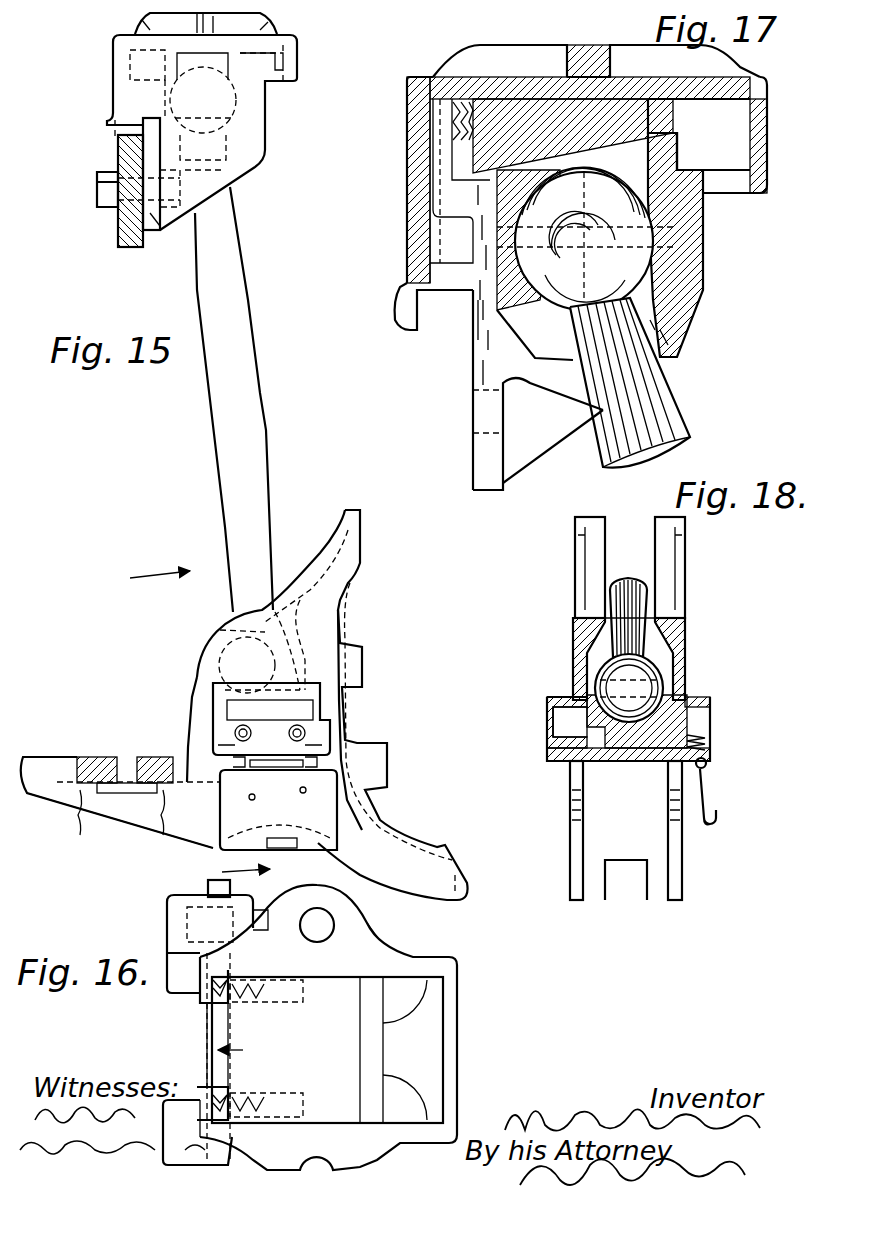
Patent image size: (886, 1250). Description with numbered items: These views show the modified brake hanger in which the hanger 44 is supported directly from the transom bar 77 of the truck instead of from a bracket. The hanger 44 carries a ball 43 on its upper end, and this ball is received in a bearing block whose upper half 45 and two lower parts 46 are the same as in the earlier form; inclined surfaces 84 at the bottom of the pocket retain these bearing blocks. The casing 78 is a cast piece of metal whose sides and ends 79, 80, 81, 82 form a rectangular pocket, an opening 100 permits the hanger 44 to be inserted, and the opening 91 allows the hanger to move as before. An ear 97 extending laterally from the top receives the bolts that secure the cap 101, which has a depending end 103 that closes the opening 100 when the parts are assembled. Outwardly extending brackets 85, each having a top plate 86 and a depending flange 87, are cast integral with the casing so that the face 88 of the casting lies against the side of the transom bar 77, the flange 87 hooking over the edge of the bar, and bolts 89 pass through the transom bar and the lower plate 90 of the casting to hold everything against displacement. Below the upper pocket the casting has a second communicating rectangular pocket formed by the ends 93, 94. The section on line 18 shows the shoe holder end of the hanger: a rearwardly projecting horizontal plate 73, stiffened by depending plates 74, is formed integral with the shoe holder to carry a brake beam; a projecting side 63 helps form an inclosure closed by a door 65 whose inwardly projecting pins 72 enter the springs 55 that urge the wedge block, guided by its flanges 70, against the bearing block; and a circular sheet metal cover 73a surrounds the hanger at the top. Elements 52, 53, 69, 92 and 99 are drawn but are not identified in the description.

In FIG. 15, the section line 18 is at (290, 870).
In FIG. 15, the ball 43 is at (232, 133).
In FIG. 18, the ball 43 is at (629, 688).
In FIG. 15, the hanger 44 is at (258, 443).
In FIG. 18, the hanger 44 is at (633, 575).
In FIG. 17, the upper half of bearing block 45 is at (663, 62).
In FIG. 18, the upper half of bearing block 45 is at (685, 722).
In FIG. 15, the lower half blocks of bearing block 46 is at (353, 610).
In FIG. 18, the lower half blocks of bearing block 46 is at (585, 663).
In FIG. 18, the seat 52 is at (603, 638).
In FIG. 16, the slot 53 is at (327, 1050).
In FIG. 15, the springs 55 is at (270, 735).
In FIG. 16, the springs 55 is at (266, 1048).
In FIG. 17, the springs 55 is at (472, 78).
In FIG. 18, the springs 55 is at (710, 740).
In FIG. 18, the projecting side 63 is at (547, 717).
In FIG. 15, the door 65 is at (278, 810).
In FIG. 18, the door 65 is at (713, 807).
In FIG. 15, the base plate 69 is at (310, 720).
In FIG. 18, the base plate 69 is at (620, 748).
In FIG. 15, the flanges 70 is at (213, 748).
In FIG. 15, the pins 72 is at (277, 798).
In FIG. 18, the pins 72 is at (713, 770).
In FIG. 15, the horizontal plate 73 is at (87, 757).
In FIG. 15, the sheet metal cover 73a is at (207, 650).
In FIG. 18, the sheet metal cover 73a is at (662, 608).
In FIG. 15, the stiffening plates 74 is at (70, 800).
In FIG. 18, the stiffening plates 74 is at (570, 830).
In FIG. 15, the transom bar 77 is at (131, 247).
In FIG. 16, the transom bar 77 is at (210, 883).
In FIG. 15, the casing 78 is at (288, 82).
In FIG. 17, the casing 78 is at (710, 263).
In FIG. 16, the side of casing 79 is at (418, 960).
In FIG. 17, the side of casing 79 is at (699, 135).
In FIG. 16, the side of casing 80 is at (467, 1040).
In FIG. 16, the end of casing 81 is at (418, 1147).
In FIG. 16, the end of casing 82 is at (205, 1003).
In FIG. 17, the inclined surfaces 84 is at (517, 308).
In FIG. 16, the brackets 85 is at (167, 943).
In FIG. 17, the brackets 85 is at (470, 295).
In FIG. 17, the top plate 86 is at (473, 383).
In FIG. 15, the depending flange 87 is at (112, 140).
In FIG. 17, the depending flange 87 is at (395, 322).
In FIG. 17, the face 88 is at (473, 432).
In FIG. 15, the bolts 89 is at (100, 202).
In FIG. 16, the bolts 89 is at (255, 920).
In FIG. 15, the lower plate 90 is at (152, 215).
In FIG. 17, the lower plate 90 is at (483, 460).
In FIG. 17, the opening 91 is at (677, 360).
In FIG. 16, the recess 92 is at (433, 1013).
In FIG. 17, the end of lower pocket 93 is at (767, 140).
In FIG. 17, the end of lower pocket 94 is at (440, 99).
In FIG. 16, the ear 97 is at (373, 945).
In FIG. 16, the hole 99 is at (319, 925).
In FIG. 16, the opening 100 is at (258, 1050).
In FIG. 15, the cap 101 is at (292, 35).
In FIG. 15, the depending end 103 is at (113, 78).
In FIG. 17, the depending end 103 is at (407, 202).